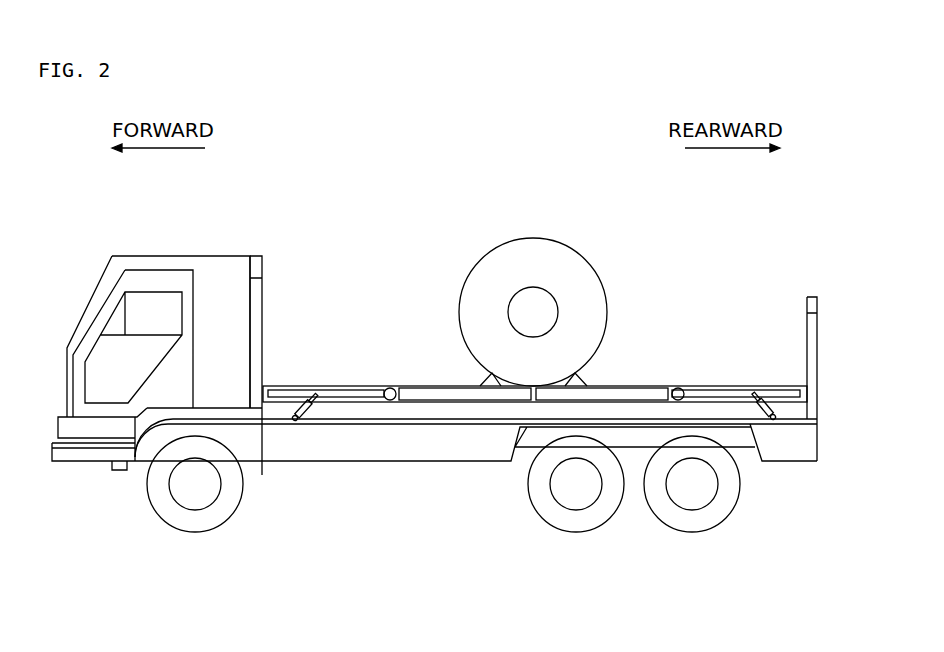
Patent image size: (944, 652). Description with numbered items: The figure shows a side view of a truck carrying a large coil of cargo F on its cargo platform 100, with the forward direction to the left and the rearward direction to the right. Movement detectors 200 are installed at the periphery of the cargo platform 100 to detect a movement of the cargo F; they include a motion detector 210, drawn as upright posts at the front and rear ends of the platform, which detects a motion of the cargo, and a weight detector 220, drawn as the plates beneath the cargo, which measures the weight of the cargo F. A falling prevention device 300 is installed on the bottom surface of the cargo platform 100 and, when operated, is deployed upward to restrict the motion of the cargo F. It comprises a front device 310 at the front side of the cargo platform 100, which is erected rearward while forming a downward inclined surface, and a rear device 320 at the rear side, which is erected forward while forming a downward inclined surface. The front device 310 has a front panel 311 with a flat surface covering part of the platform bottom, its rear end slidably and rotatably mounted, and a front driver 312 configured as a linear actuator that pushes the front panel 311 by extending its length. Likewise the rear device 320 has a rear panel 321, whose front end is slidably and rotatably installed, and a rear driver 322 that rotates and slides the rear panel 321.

The cargo platform 100 is at (450, 452).
The movement detectors 200 is at (542, 386).
The motion detector 210 is at (257, 254).
The weight detector 220 is at (485, 398).
The falling prevention device 300 is at (535, 446).
The front device 310 is at (335, 421).
The front panel 311 is at (350, 394).
The front driver 312 is at (325, 408).
The rear device 320 is at (737, 446).
The rear panel 321 is at (708, 391).
The rear driver 322 is at (751, 411).
The cargo F is at (535, 253).